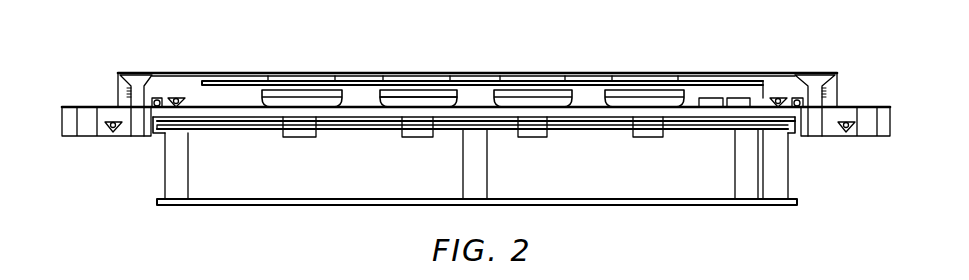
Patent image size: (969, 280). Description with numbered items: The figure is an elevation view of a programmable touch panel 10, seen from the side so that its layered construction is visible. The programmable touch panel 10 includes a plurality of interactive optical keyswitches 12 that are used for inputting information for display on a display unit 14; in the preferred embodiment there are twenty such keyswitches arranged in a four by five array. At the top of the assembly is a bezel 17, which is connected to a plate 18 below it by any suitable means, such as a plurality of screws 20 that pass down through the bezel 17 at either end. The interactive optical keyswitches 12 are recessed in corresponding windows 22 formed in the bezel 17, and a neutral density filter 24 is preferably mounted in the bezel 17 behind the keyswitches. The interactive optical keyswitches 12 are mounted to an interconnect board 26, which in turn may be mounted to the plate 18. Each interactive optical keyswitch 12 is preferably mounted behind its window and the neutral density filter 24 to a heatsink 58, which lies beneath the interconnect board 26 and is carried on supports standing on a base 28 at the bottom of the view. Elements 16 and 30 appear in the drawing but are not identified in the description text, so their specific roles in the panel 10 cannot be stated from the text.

The programmable touch panel 10 is at (572, 44).
The interactive optical keyswitch 12 is at (283, 97).
The display unit 14 is at (466, 95).
The blocks 16 is at (713, 98).
The bezel 17 is at (180, 62).
The plate 18 is at (100, 137).
The screws 20 is at (129, 73).
The windows 22 is at (320, 58).
The neutral density filter 24 is at (390, 81).
The interconnect board 26 is at (360, 131).
The base plate 28 is at (685, 199).
The right post screw 30 is at (779, 98).
The heatsink 58 is at (587, 129).